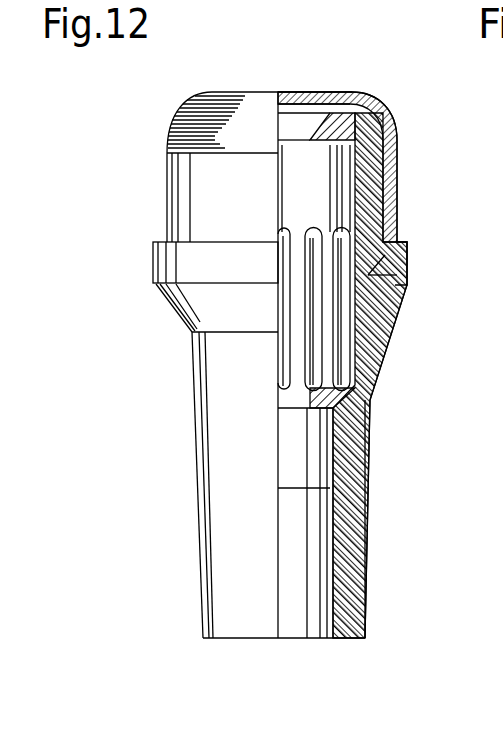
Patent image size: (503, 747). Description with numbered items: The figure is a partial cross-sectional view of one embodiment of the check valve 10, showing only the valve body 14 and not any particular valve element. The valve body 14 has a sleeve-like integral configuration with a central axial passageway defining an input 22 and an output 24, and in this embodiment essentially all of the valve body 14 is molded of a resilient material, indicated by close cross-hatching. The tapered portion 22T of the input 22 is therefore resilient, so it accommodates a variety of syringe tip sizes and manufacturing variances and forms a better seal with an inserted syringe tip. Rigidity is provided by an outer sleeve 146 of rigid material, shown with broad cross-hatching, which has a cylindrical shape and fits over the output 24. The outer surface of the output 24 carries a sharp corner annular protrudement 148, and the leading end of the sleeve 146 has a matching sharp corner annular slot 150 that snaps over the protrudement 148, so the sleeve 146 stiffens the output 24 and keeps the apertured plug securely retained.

The check valve 10 is at (162, 90).
The valve body 14 is at (374, 407).
The input 22 is at (284, 666).
The tapered portion 22T is at (337, 558).
The output 24 is at (288, 87).
The outer sleeve 146 is at (398, 168).
The annular protrudement 148 is at (400, 250).
The annular slot 150 is at (382, 275).